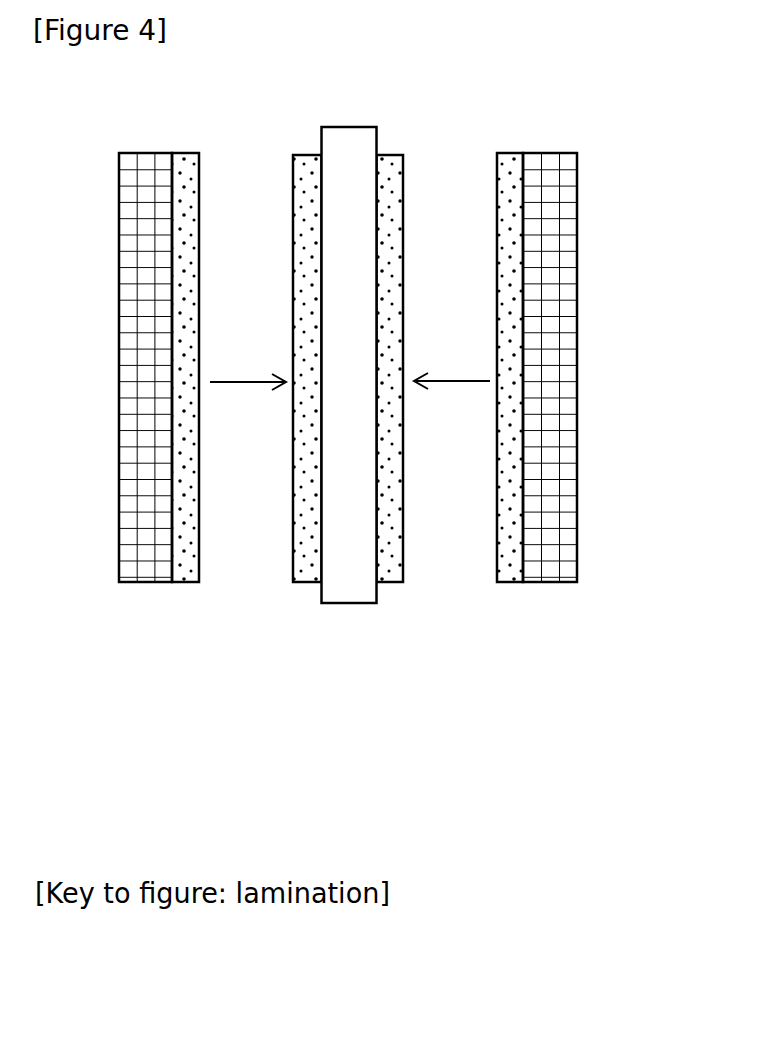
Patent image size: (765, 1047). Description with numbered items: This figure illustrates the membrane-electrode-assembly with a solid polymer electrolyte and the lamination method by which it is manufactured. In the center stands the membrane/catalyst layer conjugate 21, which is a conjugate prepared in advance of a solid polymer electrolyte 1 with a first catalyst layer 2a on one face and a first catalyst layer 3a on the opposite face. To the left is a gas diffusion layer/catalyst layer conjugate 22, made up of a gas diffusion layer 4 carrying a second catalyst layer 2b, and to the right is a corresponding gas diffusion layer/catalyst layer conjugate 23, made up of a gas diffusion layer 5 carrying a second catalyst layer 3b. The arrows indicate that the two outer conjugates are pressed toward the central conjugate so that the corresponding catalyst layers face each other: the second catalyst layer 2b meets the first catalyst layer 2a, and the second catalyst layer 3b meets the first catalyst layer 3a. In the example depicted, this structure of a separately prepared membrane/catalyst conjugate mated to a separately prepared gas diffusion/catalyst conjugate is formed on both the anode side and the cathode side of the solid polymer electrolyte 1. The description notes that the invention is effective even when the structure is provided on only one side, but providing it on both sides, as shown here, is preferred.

The solid polymer electrolyte 1 is at (339, 428).
The first catalyst layer 2a is at (302, 583).
The second catalyst layer 2b is at (185, 583).
The first catalyst layer 3a is at (383, 583).
The second catalyst layer 3b is at (514, 583).
The gas diffusion layer 4 is at (150, 583).
The gas diffusion layer 5 is at (562, 583).
The membrane/catalyst layer conjugate 21 is at (327, 465).
The gas diffusion layer/catalyst layer conjugate 22 is at (125, 478).
The gas diffusion layer/catalyst layer conjugate 23 is at (602, 478).